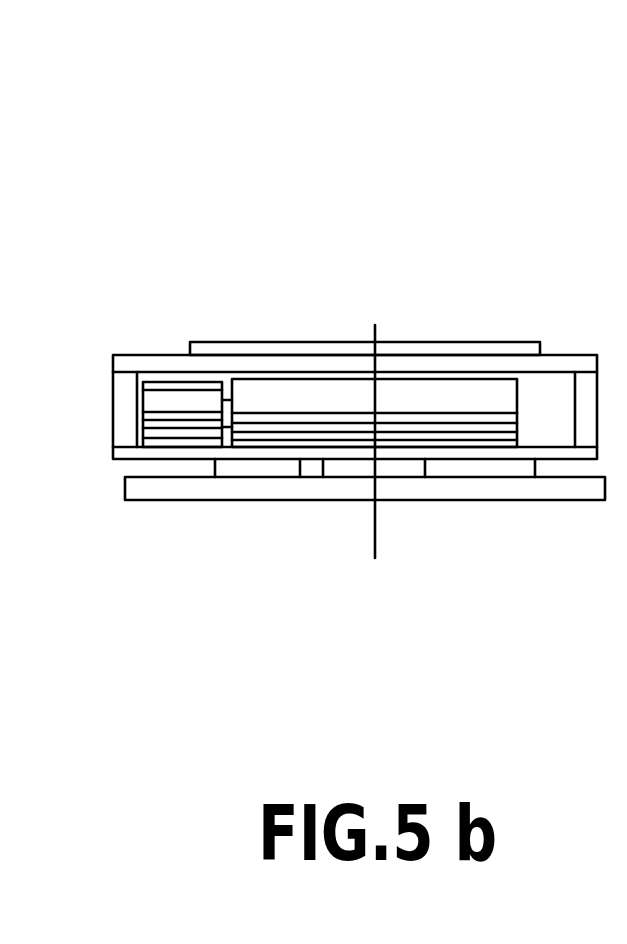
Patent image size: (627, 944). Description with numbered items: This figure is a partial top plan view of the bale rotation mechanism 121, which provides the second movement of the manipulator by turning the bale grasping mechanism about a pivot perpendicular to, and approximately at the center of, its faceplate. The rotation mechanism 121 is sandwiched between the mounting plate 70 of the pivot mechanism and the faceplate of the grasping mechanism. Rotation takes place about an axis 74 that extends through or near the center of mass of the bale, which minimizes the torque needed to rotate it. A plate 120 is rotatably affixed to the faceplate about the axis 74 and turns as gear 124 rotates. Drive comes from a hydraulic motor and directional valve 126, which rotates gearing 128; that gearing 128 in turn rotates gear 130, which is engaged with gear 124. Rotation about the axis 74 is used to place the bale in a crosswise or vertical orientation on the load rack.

The rotation mechanism 121 is at (425, 153).
The mounting plate 70 is at (505, 343).
The axis 74 is at (378, 330).
The hydraulic motor and directional valve 126 is at (168, 395).
The gearing 128 is at (274, 392).
The gear 124 is at (268, 465).
The gear 130 is at (400, 470).
The plate 120 is at (173, 490).